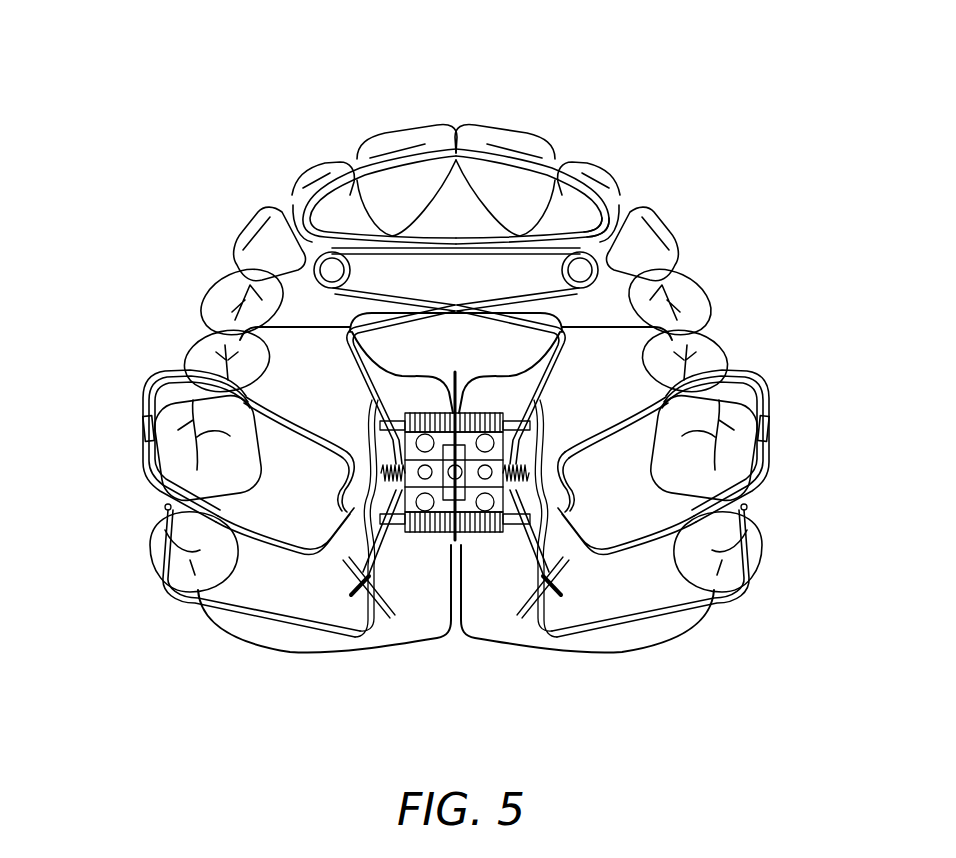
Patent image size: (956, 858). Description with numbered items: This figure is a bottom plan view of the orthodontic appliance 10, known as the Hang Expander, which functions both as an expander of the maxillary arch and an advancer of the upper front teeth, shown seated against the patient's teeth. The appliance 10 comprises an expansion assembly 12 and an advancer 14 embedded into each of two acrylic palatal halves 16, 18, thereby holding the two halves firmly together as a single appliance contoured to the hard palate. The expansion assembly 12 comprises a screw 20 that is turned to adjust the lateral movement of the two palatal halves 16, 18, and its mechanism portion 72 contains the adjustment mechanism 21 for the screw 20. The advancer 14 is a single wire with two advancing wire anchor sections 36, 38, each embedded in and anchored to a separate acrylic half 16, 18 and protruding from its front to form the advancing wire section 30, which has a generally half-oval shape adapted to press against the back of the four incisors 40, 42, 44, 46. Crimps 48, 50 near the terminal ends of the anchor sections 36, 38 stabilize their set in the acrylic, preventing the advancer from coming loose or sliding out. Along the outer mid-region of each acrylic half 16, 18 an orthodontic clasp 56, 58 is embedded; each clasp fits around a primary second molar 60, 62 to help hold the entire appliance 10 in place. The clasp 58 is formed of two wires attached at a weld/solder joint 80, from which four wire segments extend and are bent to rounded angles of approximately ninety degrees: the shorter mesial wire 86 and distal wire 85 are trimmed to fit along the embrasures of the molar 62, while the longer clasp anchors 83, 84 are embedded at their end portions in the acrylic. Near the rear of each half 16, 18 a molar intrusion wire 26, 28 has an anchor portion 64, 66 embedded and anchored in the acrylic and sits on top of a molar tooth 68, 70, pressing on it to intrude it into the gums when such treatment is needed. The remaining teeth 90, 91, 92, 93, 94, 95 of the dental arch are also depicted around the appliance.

The orthodontic appliance 10 is at (216, 105).
The expansion assembly 12 is at (482, 414).
The advancer 14 is at (564, 158).
The acrylic palatal half 16 is at (405, 627).
The acrylic palatal half 18 is at (507, 627).
The screw 20 is at (535, 475).
The adjustment mechanism 21 is at (458, 441).
The molar intrusion wire 26 is at (750, 590).
The molar intrusion wire 28 is at (162, 590).
The advancing wire section 30 is at (460, 135).
The advancing wire anchor section 36 is at (353, 357).
The advancing wire anchor section 38 is at (559, 352).
The incisor 40 is at (303, 142).
The incisor 42 is at (415, 129).
The incisor 44 is at (512, 140).
The incisor 46 is at (598, 160).
The crimp 48 is at (386, 538).
The crimp 50 is at (520, 538).
The orthodontic clasp 56 is at (140, 480).
The orthodontic clasp 58 is at (796, 386).
The molar 60 is at (185, 446).
The molar 62 is at (735, 467).
The anchor portion 64 is at (552, 606).
The anchor portion 66 is at (360, 606).
The molar tooth 68 is at (755, 530).
The molar tooth 70 is at (150, 533).
The mechanism portion 72 is at (427, 414).
The joint 80 is at (146, 430).
The clasp anchor 83 is at (578, 445).
The clasp anchor 84 is at (602, 542).
The distal wire 85 is at (770, 470).
The mesial wire 86 is at (750, 372).
The right second molar 90 is at (700, 275).
The right third molar 91 is at (727, 336).
The left second molar 92 is at (200, 280).
The left third molar 93 is at (182, 350).
The left canine 94 is at (244, 222).
The right canine 95 is at (660, 208).